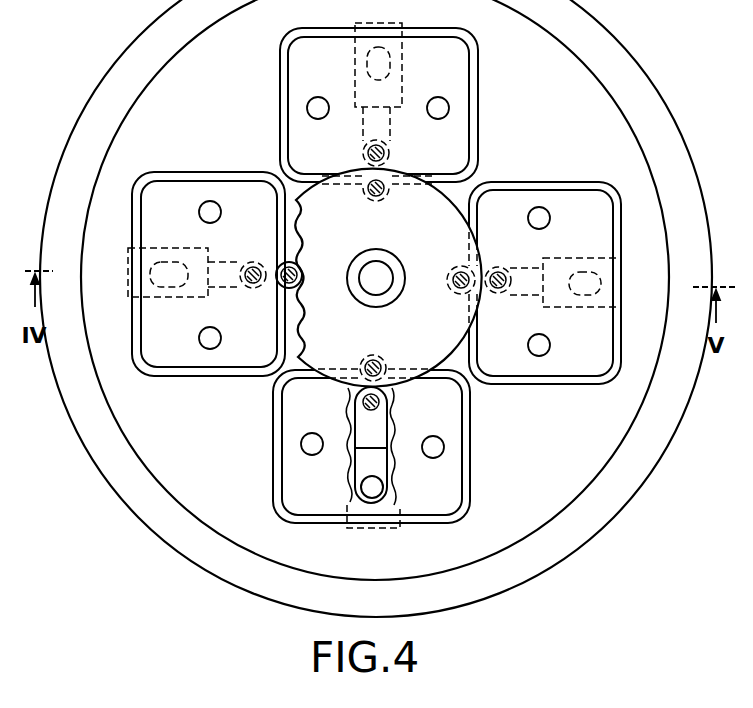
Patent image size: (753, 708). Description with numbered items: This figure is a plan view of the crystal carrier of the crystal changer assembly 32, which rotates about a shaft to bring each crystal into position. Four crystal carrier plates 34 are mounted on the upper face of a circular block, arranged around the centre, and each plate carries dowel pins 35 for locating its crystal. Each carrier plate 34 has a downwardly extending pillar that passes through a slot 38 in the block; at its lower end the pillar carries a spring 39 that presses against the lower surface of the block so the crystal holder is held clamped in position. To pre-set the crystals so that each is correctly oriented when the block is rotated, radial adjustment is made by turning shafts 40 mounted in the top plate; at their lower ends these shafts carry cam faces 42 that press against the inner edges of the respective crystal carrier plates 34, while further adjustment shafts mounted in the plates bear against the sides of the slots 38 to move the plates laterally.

The crystal changer assembly 32 is at (666, 481).
The crystal carrier plate 34 is at (594, 336).
The dowel pin 35 is at (539, 207).
The slot 38 is at (380, 424).
The spring 39 is at (395, 503).
The shaft 40 is at (382, 360).
The cam face 42 is at (367, 357).